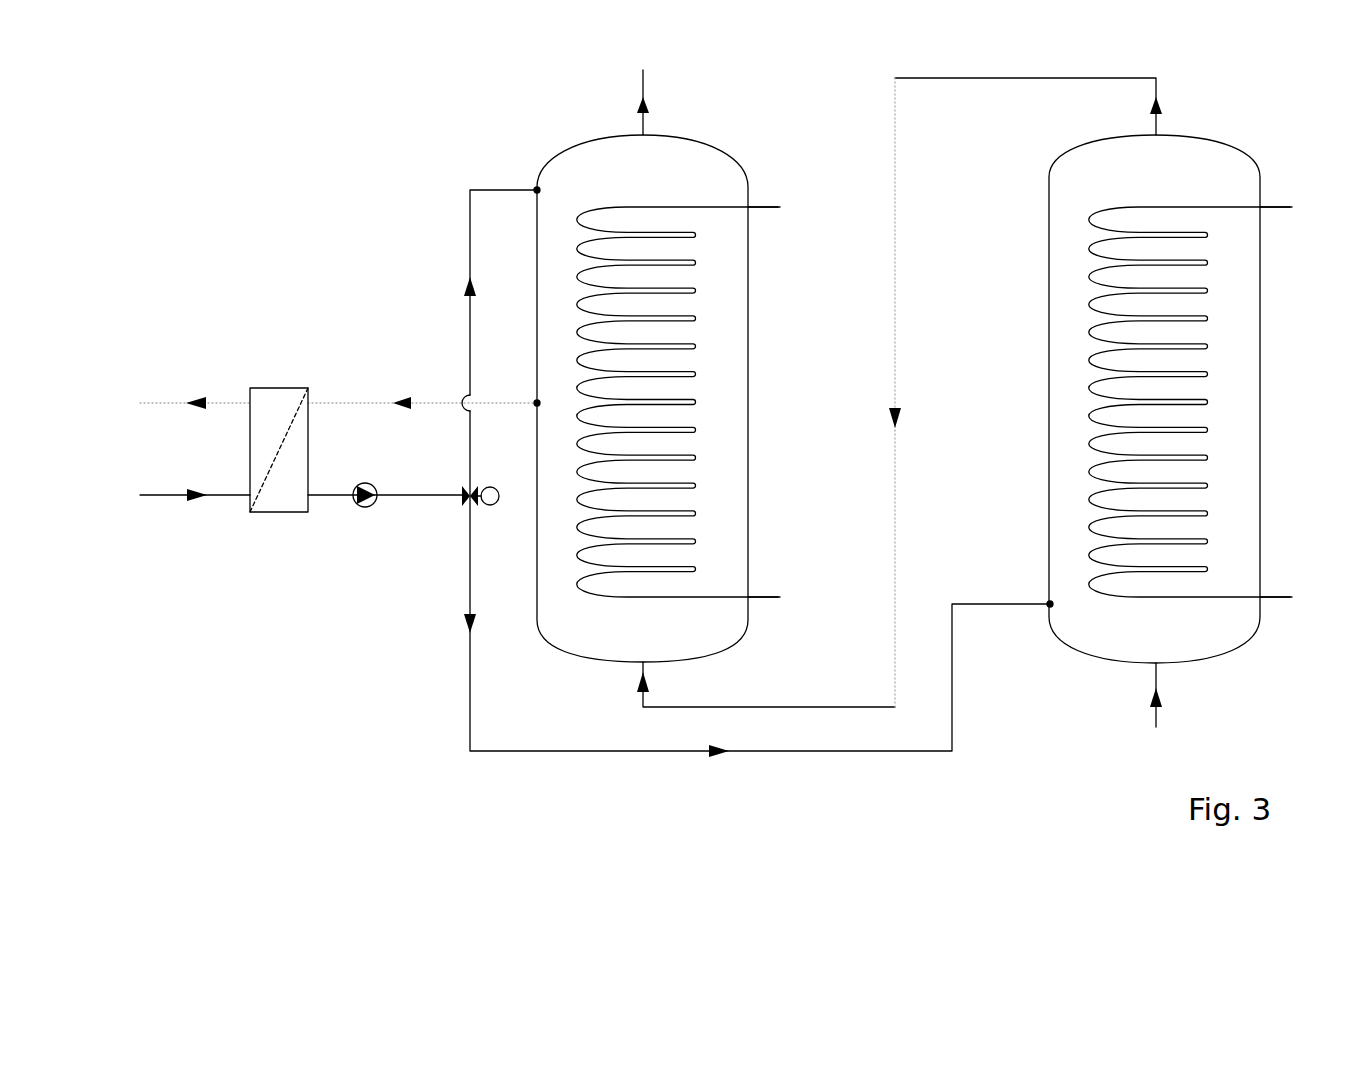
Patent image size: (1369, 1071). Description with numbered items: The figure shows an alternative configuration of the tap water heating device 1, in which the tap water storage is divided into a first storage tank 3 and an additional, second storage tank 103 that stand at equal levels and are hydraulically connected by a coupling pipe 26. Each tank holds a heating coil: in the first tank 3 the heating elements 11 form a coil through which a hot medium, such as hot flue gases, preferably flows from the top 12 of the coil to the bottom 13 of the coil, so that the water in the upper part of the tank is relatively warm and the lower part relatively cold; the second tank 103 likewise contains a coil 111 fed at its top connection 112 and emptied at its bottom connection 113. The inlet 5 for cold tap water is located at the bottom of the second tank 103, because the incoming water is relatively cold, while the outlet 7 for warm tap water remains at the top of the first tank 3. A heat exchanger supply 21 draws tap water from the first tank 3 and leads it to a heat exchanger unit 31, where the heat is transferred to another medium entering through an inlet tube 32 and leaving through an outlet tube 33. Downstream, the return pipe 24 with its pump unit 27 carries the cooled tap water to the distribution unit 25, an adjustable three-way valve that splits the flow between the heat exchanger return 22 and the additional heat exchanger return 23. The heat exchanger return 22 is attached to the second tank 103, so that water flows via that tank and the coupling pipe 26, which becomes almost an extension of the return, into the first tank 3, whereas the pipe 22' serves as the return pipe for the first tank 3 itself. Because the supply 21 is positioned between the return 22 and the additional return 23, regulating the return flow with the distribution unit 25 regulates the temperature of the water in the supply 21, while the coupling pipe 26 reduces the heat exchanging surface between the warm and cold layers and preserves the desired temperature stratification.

The tap water heating device 1 is at (322, 134).
The storage tank 3 is at (745, 278).
The inlet 5 is at (1154, 679).
The outlet 7 is at (643, 122).
The heating elements 11 is at (680, 372).
The top of the coil 12 is at (755, 207).
The bottom of the coil 13 is at (760, 597).
The heat exchanger supply 21 is at (525, 403).
The heat exchanger return 22 is at (747, 619).
The return pipe for storage tank 22' is at (766, 669).
The additional heat exchanger return 23 is at (514, 190).
The return pipe 24 is at (407, 495).
The distribution unit 25 is at (466, 493).
The coupling pipe 26 is at (893, 168).
The pump unit 27 is at (355, 500).
The heat exchanger unit 31 is at (297, 390).
The inlet tube 32 is at (203, 495).
The outlet tube 33 is at (223, 407).
The additional storage tank 103 is at (1050, 205).
The heat exchanger coil of second tank 111 is at (1112, 427).
The second coil inlet 112 is at (1280, 207).
The second coil outlet 113 is at (1277, 598).